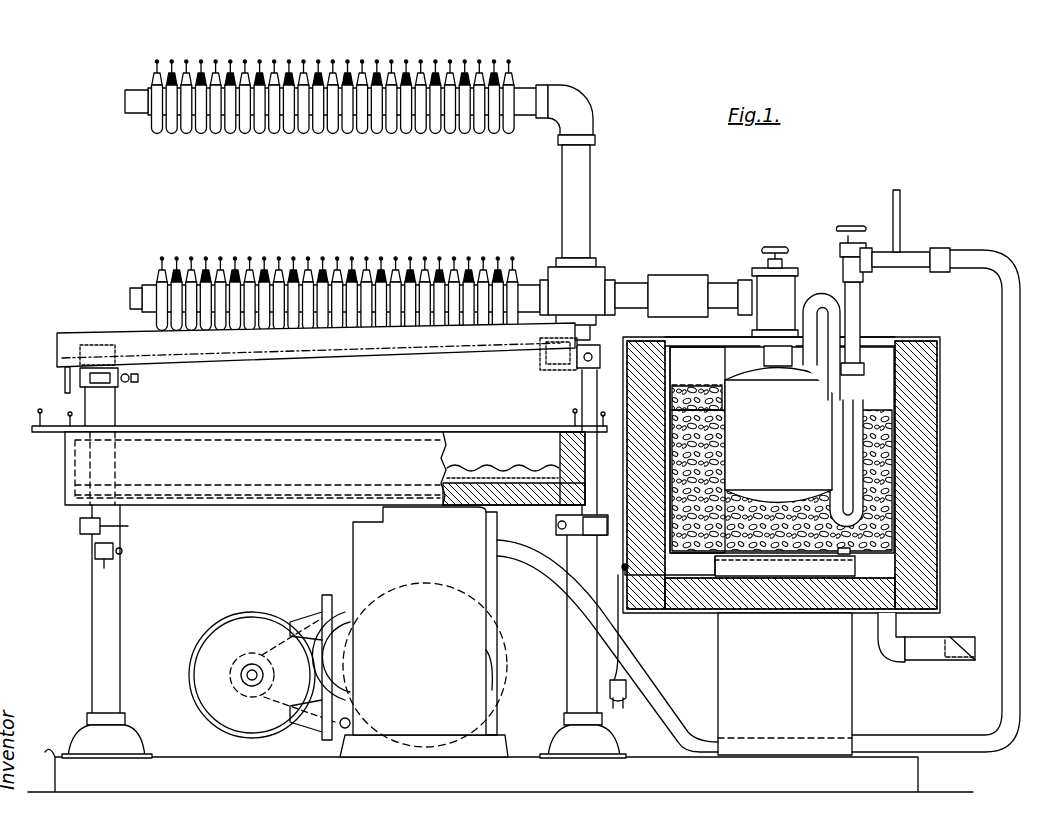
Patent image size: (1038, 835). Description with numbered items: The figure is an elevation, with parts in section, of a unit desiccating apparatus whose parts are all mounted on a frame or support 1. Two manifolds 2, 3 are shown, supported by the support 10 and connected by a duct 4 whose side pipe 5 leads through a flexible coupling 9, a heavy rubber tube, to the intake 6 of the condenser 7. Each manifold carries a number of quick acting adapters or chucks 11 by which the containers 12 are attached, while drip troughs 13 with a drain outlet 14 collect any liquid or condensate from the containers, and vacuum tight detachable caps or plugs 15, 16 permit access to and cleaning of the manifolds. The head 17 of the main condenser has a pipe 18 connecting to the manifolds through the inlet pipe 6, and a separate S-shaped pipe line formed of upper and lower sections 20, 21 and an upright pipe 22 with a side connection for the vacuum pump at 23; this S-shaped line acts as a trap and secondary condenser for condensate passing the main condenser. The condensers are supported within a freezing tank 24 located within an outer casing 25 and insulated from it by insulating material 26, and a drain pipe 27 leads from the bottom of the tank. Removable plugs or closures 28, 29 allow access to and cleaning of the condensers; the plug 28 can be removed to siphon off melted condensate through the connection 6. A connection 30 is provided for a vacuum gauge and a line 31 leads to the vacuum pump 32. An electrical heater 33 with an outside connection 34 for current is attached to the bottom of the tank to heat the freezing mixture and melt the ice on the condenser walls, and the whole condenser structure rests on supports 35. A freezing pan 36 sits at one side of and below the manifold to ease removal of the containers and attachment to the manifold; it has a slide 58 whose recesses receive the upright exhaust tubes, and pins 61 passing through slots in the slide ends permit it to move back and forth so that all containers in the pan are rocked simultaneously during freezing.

The frame or support 1 is at (30, 728).
The manifold 2 is at (314, 105).
The manifold 3 is at (314, 278).
The duct 4 is at (622, 283).
The side pipe 5 is at (584, 182).
The intake 6 is at (720, 285).
The condenser 7 is at (745, 380).
The coupling 9 is at (673, 277).
The support 10 is at (96, 600).
The quick acting adapters or chucks 11 is at (350, 247).
The containers 12 is at (222, 130).
The drip troughs 13 is at (310, 358).
The drain outlet 14 is at (62, 377).
The detachable cap or plug 15 is at (136, 96).
The detachable cap or plug 16 is at (131, 294).
The head of the main condenser 17 is at (724, 373).
The pipe 18 is at (764, 293).
The upper section of S-shaped pipe line 20 is at (813, 300).
The lower section of S-shaped pipe line 21 is at (823, 450).
The upright pipe 22 is at (868, 286).
The vacuum pump connection 23 is at (909, 225).
The freezing tank 24 is at (922, 360).
The outer casing 25 is at (798, 475).
The insulating material 26 is at (912, 410).
The drain pipe 27 is at (930, 660).
The removable plug or closure 28 is at (775, 250).
The removable plug or closure 29 is at (848, 228).
The vacuum gauge connection 30 is at (899, 210).
The line 31 is at (998, 252).
The vacuum pump 32 is at (356, 536).
The electrical heater 33 is at (770, 577).
The outside connection 34 is at (620, 705).
The supports 35 is at (835, 718).
The freezing pan 36 is at (62, 462).
The slide 58 is at (329, 442).
The pins 61 is at (68, 422).